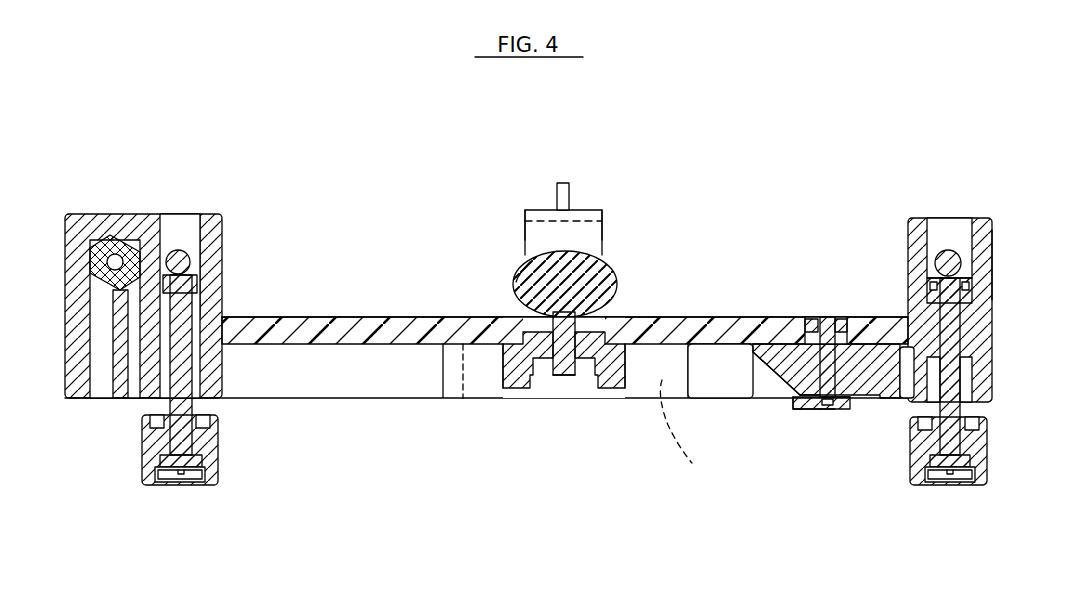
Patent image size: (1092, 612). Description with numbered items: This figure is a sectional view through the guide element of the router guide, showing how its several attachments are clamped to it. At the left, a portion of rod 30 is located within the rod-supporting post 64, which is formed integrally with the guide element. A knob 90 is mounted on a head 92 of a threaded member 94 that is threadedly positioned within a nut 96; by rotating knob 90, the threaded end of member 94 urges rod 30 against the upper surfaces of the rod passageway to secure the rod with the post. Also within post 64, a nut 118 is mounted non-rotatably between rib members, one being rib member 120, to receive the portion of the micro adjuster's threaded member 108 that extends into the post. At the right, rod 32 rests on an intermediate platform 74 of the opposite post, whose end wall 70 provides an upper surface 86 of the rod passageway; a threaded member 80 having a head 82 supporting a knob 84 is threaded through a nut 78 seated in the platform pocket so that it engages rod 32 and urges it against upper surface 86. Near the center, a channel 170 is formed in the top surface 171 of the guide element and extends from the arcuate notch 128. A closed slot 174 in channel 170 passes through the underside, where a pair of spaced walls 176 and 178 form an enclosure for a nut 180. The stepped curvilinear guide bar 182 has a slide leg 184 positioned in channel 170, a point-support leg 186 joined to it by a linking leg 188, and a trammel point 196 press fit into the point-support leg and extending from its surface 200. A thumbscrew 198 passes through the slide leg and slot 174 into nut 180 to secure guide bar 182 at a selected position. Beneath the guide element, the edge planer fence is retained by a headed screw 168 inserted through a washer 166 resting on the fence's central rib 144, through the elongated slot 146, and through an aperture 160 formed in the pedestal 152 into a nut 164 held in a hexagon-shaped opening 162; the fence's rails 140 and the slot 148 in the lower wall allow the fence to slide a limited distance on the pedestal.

The rod 30 is at (222, 230).
The rod 32 is at (991, 252).
The rod-supporting post 64 is at (69, 212).
The end wall 70 is at (958, 228).
The intermediate platform 74 is at (975, 262).
The nut 78 is at (967, 301).
The threaded member 80 is at (950, 348).
The head 82 is at (983, 461).
The knob 84 is at (912, 466).
The upper surface 86 is at (934, 240).
The knob 90 is at (213, 480).
The head 92 is at (193, 462).
The threaded member 94 is at (182, 405).
The nut 96 is at (197, 290).
The threaded member 108 is at (110, 240).
The nut 118 is at (118, 292).
The rib member 120 is at (96, 328).
The arcuate notch 128 is at (688, 435).
The rails 140 is at (762, 348).
The central rib 144 is at (786, 398).
The elongated slot 146 is at (828, 410).
The slot 148 is at (760, 386).
The pedestal 152 is at (780, 393).
The aperture 160 is at (826, 330).
The hexagon-shaped opening 162 is at (788, 345).
The nut 164 is at (842, 320).
The washer 166 is at (800, 404).
The headed screw 168 is at (818, 408).
The channel 170 is at (597, 317).
The top surface 171 is at (331, 317).
The closed slot 174 is at (543, 283).
The wall 176 is at (528, 375).
The wall 178 is at (616, 385).
The nut 180 is at (545, 388).
The stepped curvilinear guide bar 182 is at (520, 221).
The slide leg 184 is at (508, 380).
The point-support leg 186 is at (545, 218).
The linking leg 188 is at (587, 237).
The trammel point 196 is at (565, 183).
The thumbscrew 198 is at (543, 268).
The surface 200 is at (586, 209).